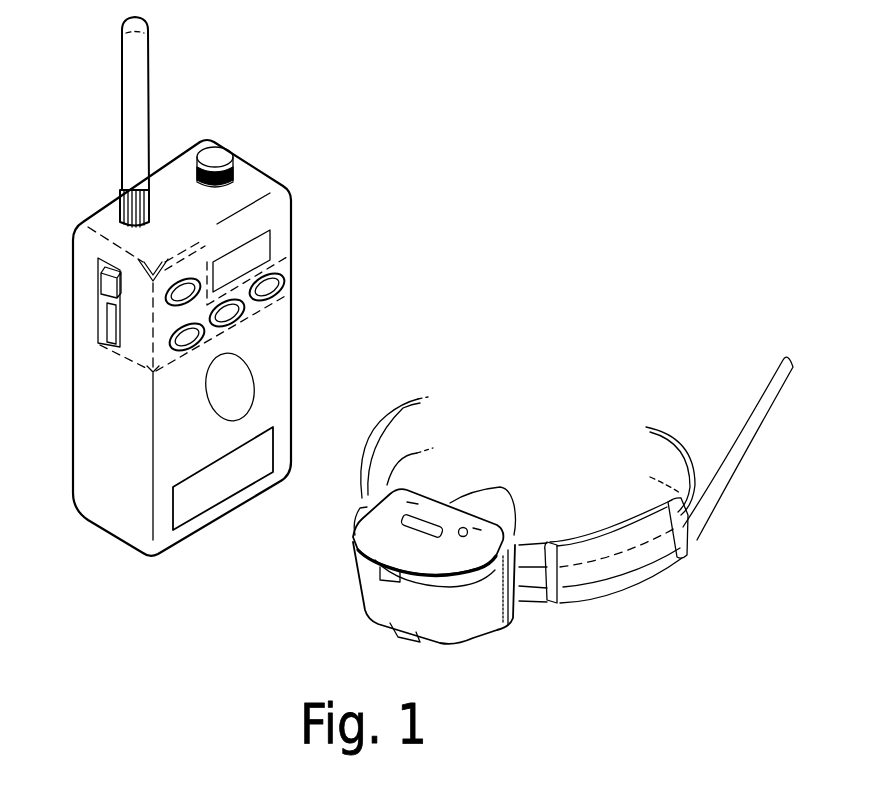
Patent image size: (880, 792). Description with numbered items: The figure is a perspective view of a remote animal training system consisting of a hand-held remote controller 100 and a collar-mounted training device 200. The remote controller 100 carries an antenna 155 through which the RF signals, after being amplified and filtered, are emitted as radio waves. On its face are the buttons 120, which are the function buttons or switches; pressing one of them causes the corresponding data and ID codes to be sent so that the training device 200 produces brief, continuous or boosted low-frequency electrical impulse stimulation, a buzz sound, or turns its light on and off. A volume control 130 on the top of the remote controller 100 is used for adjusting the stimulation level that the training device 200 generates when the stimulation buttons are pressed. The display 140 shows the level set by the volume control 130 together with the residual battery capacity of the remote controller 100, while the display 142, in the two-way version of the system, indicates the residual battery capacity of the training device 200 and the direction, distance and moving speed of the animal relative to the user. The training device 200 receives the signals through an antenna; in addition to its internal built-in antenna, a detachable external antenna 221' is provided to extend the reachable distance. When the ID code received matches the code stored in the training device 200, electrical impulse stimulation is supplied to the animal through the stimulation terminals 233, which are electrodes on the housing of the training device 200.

The remote controller 100 is at (386, 102).
The antenna 155 is at (140, 80).
The volume control 130 is at (222, 160).
The display 140 is at (266, 248).
The buttons 120 is at (99, 326).
The display 142 is at (238, 387).
The training device 200 is at (573, 373).
The detachable external antenna 221' is at (738, 441).
The stimulation terminals 233 is at (507, 490).